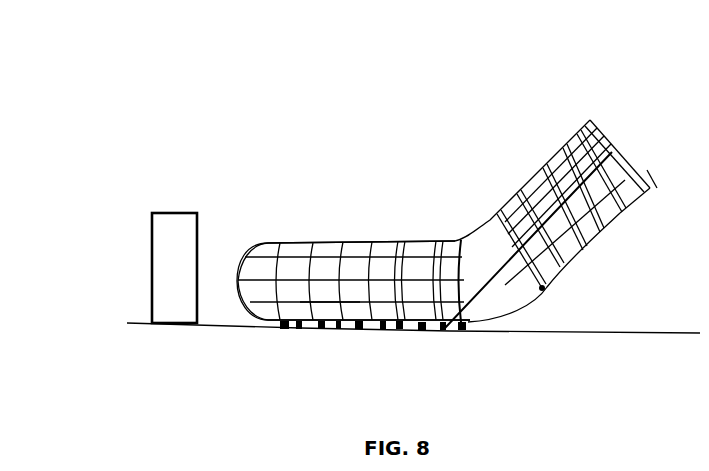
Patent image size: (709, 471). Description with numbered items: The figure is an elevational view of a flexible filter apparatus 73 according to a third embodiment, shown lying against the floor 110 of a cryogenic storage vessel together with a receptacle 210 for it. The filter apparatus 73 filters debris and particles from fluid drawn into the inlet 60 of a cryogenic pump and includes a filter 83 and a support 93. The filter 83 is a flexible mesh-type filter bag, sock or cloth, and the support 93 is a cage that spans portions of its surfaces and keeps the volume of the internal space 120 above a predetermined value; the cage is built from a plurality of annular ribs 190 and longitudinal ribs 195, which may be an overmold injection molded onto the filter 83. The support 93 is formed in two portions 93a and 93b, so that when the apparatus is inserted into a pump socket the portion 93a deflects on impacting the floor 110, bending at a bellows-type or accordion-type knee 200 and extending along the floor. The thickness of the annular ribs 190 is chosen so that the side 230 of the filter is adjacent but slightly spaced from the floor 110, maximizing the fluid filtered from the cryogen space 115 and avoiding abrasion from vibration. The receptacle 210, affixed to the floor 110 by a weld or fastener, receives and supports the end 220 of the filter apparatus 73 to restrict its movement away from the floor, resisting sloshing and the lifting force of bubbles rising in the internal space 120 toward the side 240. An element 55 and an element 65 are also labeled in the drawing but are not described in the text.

The flexible filter apparatus 73 is at (405, 148).
The cryogen space 115 is at (234, 178).
The cuff 55 is at (633, 162).
The filter 83 is at (477, 243).
The support 93 is at (327, 244).
The portion of support 93a is at (383, 244).
The portion of support 93b is at (538, 180).
The side 240 is at (343, 244).
The annular ribs 190 is at (280, 243).
The longitudinal ribs 195 is at (264, 252).
The receptacle 210 is at (131, 323).
The end 220 is at (223, 282).
The internal space 120 is at (325, 289).
The side 230 is at (378, 330).
The inlet 60 is at (430, 330).
The knee 200 is at (508, 303).
The heel element 65 is at (505, 275).
The floor 110 is at (658, 338).